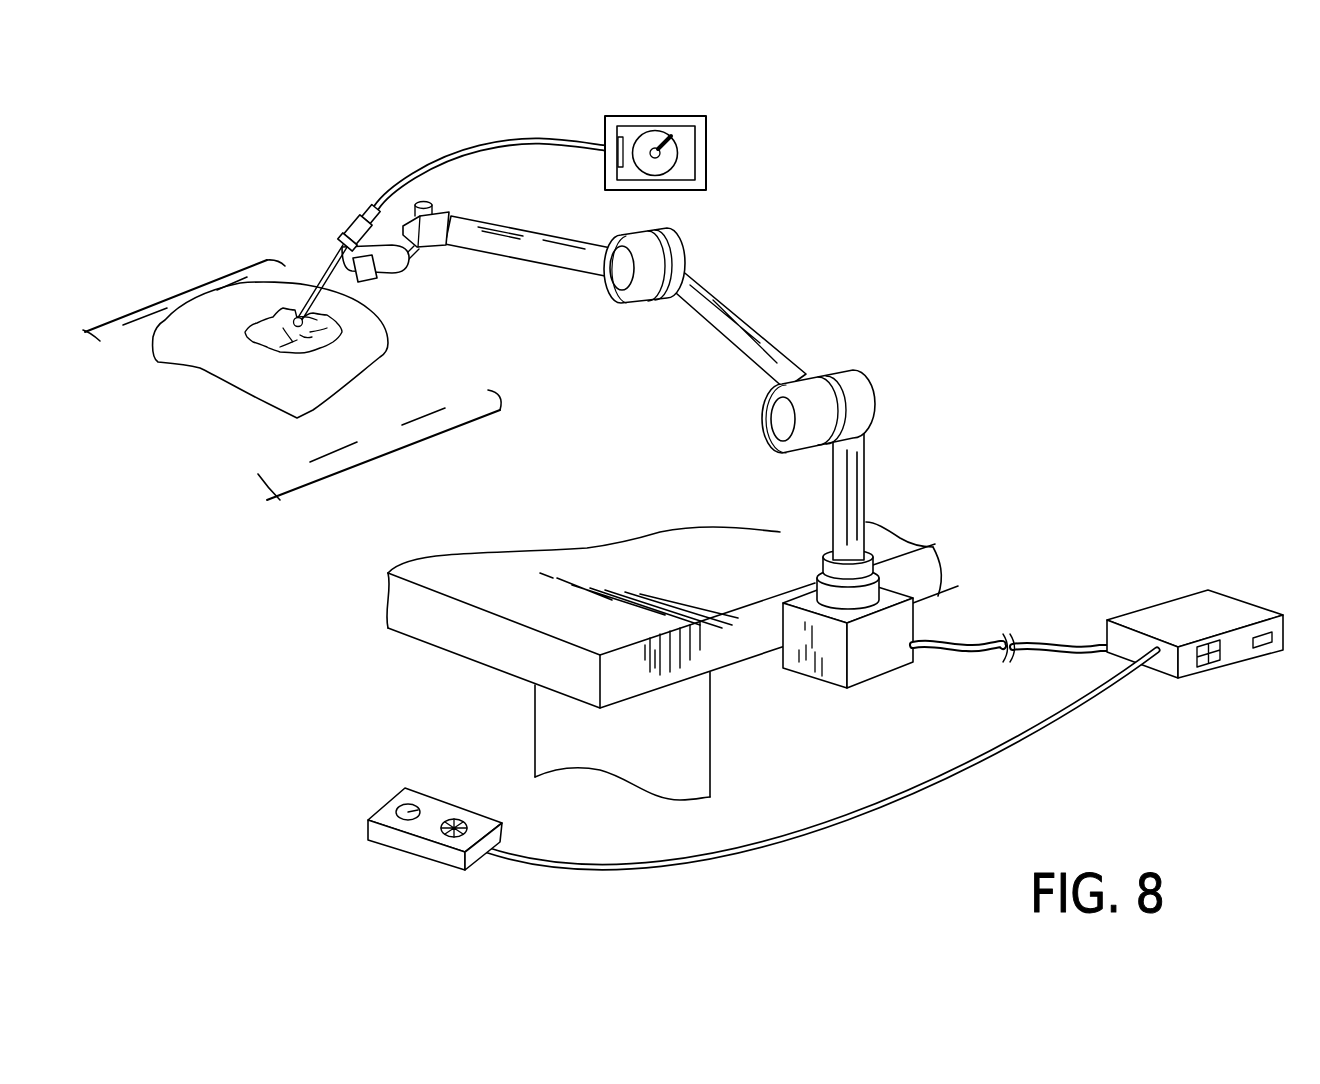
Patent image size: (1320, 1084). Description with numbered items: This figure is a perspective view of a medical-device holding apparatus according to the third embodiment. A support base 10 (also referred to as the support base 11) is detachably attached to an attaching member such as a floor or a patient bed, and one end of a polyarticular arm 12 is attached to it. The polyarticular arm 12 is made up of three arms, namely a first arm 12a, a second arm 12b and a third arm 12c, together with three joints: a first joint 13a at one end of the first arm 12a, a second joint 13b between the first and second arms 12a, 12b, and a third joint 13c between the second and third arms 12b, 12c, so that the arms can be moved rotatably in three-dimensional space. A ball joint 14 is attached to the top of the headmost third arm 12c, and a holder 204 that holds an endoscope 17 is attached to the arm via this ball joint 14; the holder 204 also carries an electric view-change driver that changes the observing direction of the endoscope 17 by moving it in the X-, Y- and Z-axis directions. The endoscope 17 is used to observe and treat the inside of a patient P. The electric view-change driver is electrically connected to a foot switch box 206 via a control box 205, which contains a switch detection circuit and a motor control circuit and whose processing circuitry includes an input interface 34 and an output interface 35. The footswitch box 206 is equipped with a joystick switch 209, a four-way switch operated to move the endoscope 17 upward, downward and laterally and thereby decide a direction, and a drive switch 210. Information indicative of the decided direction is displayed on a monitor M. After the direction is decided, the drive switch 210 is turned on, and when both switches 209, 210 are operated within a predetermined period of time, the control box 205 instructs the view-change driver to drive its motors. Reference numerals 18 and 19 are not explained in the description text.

The support base 10 is at (432, 628).
The support base 11 is at (876, 669).
The polyarticular arm 12 is at (726, 395).
The first arm 12a is at (866, 472).
The second arm 12b is at (745, 316).
The third arm 12c is at (531, 245).
The first joint 13a is at (884, 578).
The second joint 13b is at (878, 396).
The third joint 13c is at (680, 242).
The ball joint 14 is at (442, 216).
The endoscope 17 is at (323, 283).
The mount 18 is at (366, 283).
The endoscope 19 is at (366, 241).
The holder 204 is at (405, 276).
The control box 205 is at (885, 705).
The input interface 34 is at (1214, 665).
The output interface 35 is at (1268, 650).
The foot switch box 206 is at (431, 822).
The joystick switch 209 is at (452, 838).
The drive switch 210 is at (400, 822).
The monitor M is at (665, 116).
The patient P is at (423, 427).